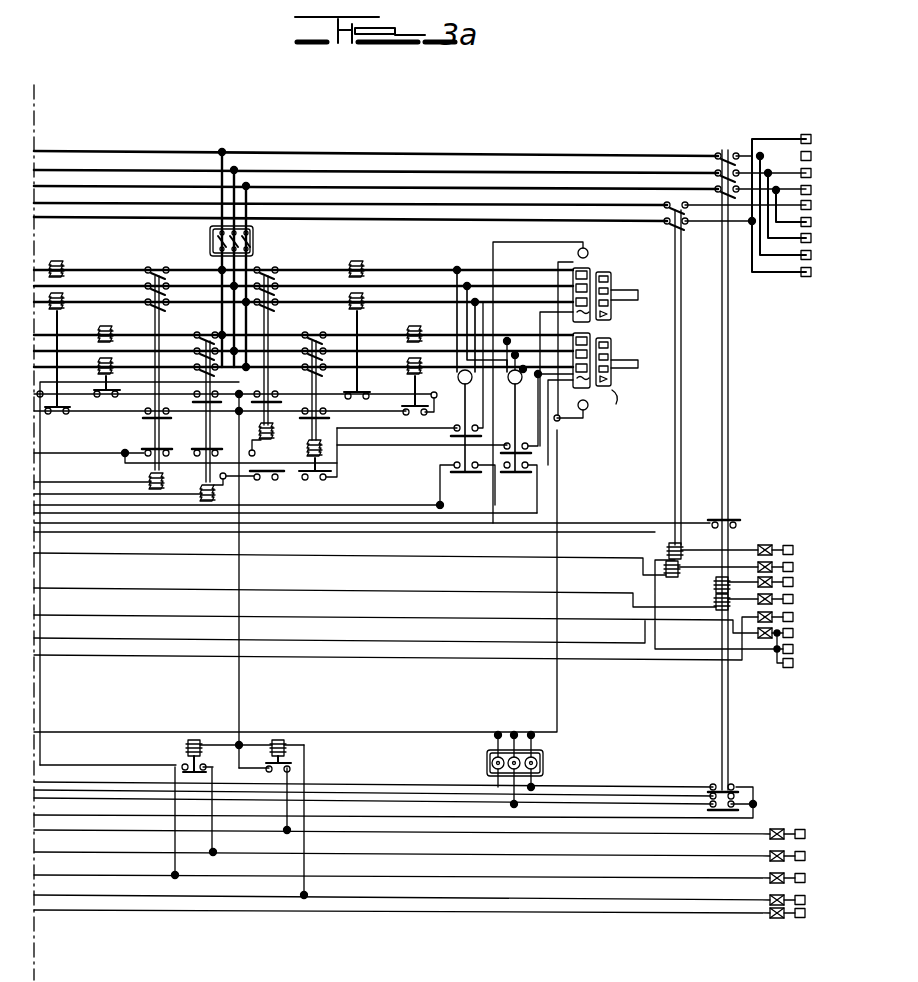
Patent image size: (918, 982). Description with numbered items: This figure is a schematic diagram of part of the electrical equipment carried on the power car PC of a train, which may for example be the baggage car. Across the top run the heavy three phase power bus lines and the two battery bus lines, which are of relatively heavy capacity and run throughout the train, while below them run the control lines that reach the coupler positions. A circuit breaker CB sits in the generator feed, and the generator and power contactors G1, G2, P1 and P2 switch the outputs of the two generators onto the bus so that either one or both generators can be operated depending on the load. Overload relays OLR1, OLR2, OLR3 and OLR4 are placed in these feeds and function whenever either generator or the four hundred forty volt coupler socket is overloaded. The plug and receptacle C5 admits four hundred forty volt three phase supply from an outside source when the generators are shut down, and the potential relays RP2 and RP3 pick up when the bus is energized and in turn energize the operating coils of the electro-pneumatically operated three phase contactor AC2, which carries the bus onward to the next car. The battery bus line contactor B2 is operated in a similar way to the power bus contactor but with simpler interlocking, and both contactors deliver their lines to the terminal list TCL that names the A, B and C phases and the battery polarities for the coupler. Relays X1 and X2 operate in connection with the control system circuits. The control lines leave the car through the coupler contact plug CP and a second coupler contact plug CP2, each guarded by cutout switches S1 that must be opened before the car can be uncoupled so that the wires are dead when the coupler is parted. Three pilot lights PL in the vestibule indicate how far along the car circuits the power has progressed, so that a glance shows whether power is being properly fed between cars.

The power car PC is at (376, 158).
The circuit breaker CB is at (257, 250).
The overload relay OLR1 is at (58, 330).
The overload relay OLR2 is at (104, 355).
The overload relay OLR3 is at (366, 268).
The overload relay OLR4 is at (417, 367).
The contactor G' G1 is at (157, 264).
The contactor G2 is at (223, 408).
The contactor P' P1 is at (270, 272).
The contactor P2 is at (318, 396).
The relay RP2 is at (458, 382).
The relay RP3 is at (508, 380).
The plug and receptacle connector C5 is at (600, 264).
The three phase contactor AC2 is at (757, 461).
The battery bus line contactor B2 is at (735, 366).
The terminal connection list TCL is at (775, 190).
The coupler contact plug CP is at (777, 528).
The cutout switch S1 is at (757, 541).
The relay X1 is at (200, 755).
The relay X2 is at (273, 755).
The pilot light PL is at (528, 770).
The coupler contact plug CP2 is at (795, 820).